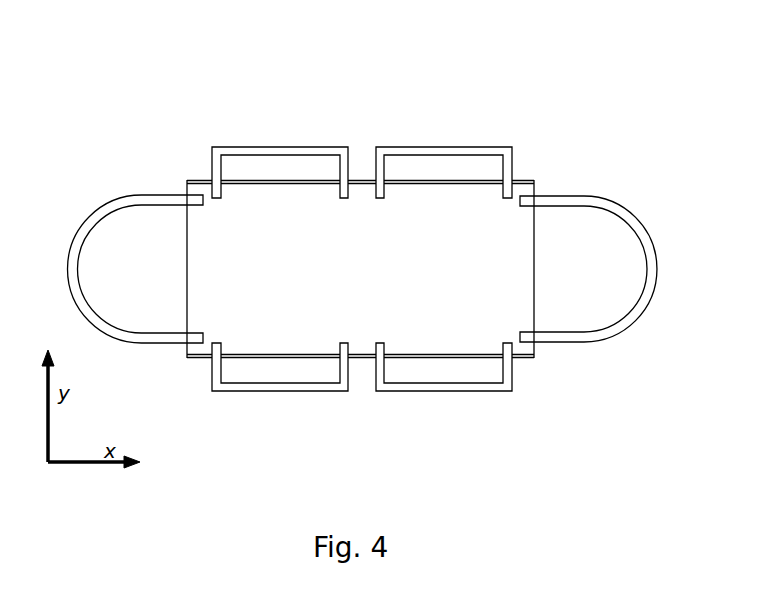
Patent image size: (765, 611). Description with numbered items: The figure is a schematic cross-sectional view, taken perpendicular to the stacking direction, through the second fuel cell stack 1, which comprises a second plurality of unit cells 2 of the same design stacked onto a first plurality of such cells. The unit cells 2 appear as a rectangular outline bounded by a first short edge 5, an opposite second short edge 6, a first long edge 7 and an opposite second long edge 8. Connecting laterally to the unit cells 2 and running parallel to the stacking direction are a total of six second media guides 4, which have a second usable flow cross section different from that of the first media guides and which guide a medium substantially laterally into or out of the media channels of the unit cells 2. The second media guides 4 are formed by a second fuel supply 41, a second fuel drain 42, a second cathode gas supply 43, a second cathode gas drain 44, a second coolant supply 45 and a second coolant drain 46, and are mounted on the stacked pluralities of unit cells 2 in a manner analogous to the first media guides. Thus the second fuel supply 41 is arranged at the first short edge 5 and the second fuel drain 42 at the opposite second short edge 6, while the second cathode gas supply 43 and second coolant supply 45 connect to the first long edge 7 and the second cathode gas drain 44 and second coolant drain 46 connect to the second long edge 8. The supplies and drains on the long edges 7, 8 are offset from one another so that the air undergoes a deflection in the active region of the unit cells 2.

The fuel cell stack 1 is at (518, 102).
The unit cells 2 is at (196, 190).
The second media guides 4 is at (359, 275).
The second fuel supply 41 is at (113, 203).
The second fuel drain 42 is at (580, 197).
The second cathode gas supply 43 is at (437, 152).
The second cathode gas drain 44 is at (272, 391).
The second coolant supply 45 is at (243, 152).
The second coolant drain 46 is at (470, 391).
The first short edge 5 is at (187, 354).
The second short edge 6 is at (537, 350).
The first long edge 7 is at (353, 183).
The second long edge 8 is at (360, 358).